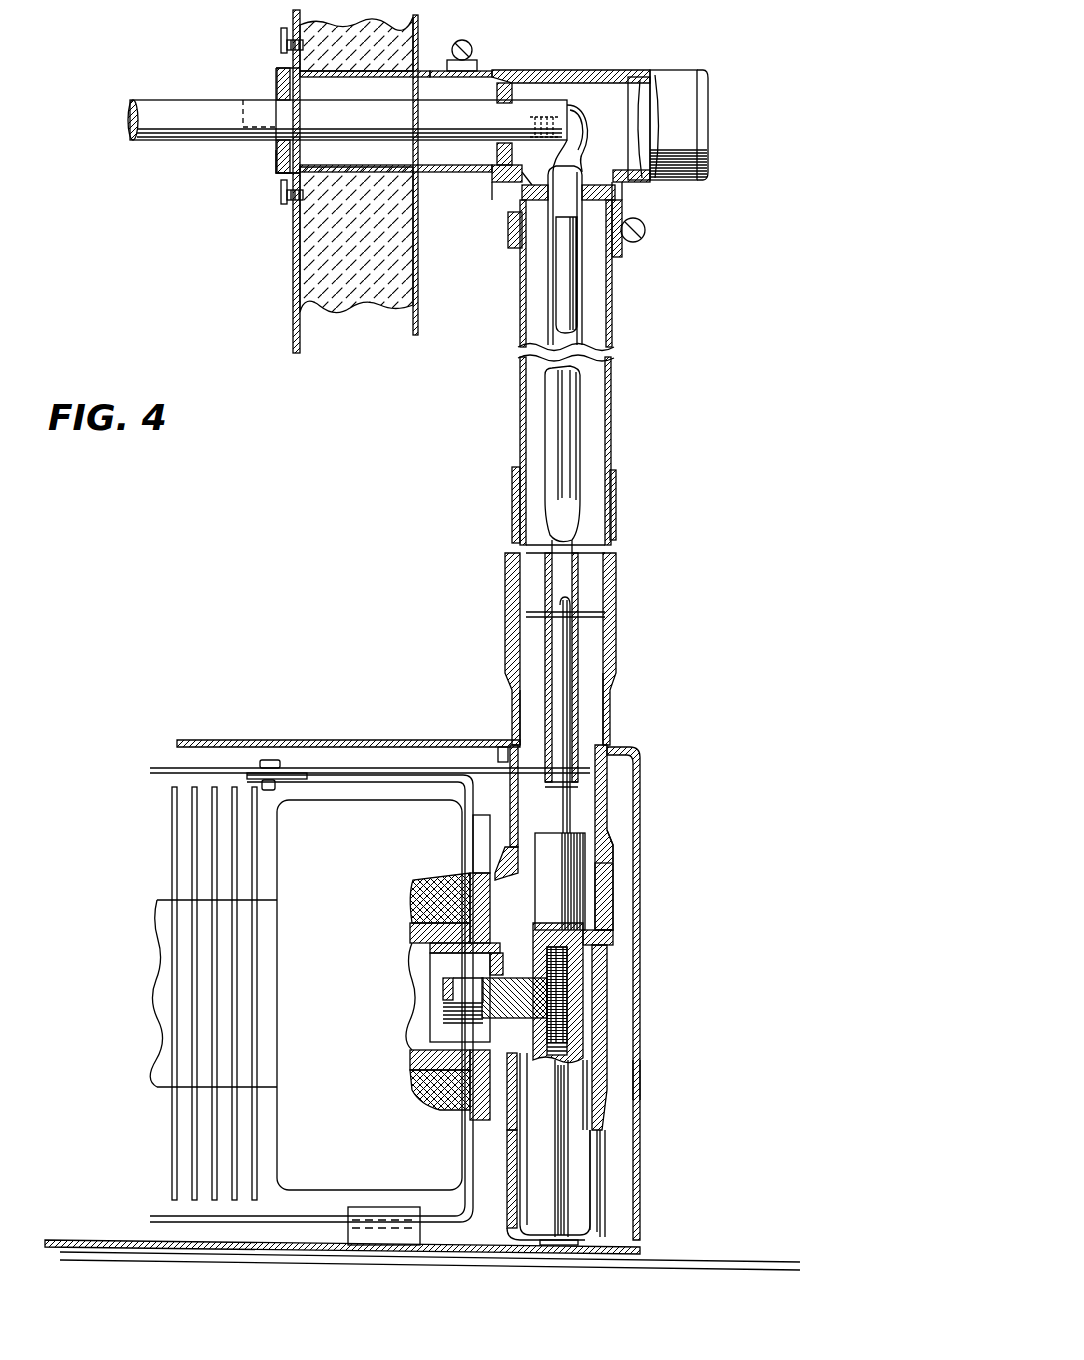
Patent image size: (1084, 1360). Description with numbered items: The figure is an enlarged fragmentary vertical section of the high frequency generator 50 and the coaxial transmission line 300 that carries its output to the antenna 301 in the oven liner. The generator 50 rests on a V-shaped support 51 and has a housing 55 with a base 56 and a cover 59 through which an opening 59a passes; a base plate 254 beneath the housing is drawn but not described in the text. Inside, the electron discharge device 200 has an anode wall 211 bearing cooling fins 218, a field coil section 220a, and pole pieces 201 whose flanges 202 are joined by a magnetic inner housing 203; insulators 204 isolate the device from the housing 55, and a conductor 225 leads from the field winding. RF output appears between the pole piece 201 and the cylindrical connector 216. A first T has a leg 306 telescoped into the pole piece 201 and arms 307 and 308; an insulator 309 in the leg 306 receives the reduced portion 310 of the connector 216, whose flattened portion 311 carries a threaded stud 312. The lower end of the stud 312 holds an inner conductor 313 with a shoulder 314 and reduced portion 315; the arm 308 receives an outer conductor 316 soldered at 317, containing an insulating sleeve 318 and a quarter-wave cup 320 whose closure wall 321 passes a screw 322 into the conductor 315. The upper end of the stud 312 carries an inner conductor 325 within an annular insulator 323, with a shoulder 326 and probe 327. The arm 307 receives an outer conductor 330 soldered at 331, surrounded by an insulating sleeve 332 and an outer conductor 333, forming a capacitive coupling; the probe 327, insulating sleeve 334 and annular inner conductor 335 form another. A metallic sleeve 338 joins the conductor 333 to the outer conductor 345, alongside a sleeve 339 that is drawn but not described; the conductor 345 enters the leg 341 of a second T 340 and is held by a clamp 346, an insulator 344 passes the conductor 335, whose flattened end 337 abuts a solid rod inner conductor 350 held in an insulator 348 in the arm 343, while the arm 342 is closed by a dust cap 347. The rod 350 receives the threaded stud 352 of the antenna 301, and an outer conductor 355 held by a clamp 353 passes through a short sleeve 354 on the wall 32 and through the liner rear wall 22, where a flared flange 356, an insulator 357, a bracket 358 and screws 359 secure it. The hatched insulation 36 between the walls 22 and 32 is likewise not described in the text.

The liner rear wall 22 is at (302, 16).
The wall 32 is at (420, 42).
The insulation 36 is at (355, 30).
The high frequency generator 50 is at (207, 725).
The V-shaped support 51 is at (752, 1262).
The housing 55 is at (642, 897).
The base 56 is at (641, 1082).
The cover 59 is at (368, 740).
The opening 59a is at (500, 745).
The electron discharge device 200 is at (158, 898).
The pole piece 201 is at (410, 932).
The flange 202 is at (485, 815).
The inner housing 203 is at (153, 768).
The insulator 204 is at (348, 1230).
The anode wall 211 is at (157, 1020).
The cylindrical connector 216 is at (445, 1003).
The cooling fins 218 is at (172, 818).
The field coil section 220a is at (335, 812).
The conductor 225 is at (268, 760).
The base plate 254 is at (600, 1244).
The transmission line 300 is at (632, 557).
The antenna 301 is at (170, 141).
The leg 306 is at (430, 956).
The arm 307 is at (615, 915).
The arm 308 is at (608, 1100).
The insulator 309 is at (410, 1062).
The reduced portion 310 is at (492, 962).
The flattened and apertured portion 311 is at (582, 1008).
The threaded stud 312 is at (568, 1025).
The inner conductor 313 is at (565, 1048).
The shoulder 314 is at (590, 1115).
The reduced portion 315 is at (566, 1180).
The outer conductor 316 is at (512, 1160).
The soldering 317 is at (505, 1120).
The insulating sleeve 318 is at (598, 1215).
The cylindrical cup 320 is at (606, 1195).
The outer closure wall 321 is at (540, 1241).
The screw 322 is at (525, 1232).
The annular insulator 323 is at (606, 940).
The inner conductor 325 is at (583, 862).
The shoulder 326 is at (582, 833).
The probe 327 is at (568, 717).
The outer annular conductor 330 is at (610, 735).
The soldering 331 is at (614, 858).
The insulating sleeve 332 is at (612, 692).
The outer conductor 333 is at (614, 678).
The insulating sleeve 334 is at (577, 796).
The annular inner conductor 335 is at (575, 388).
The flattened upper end 337 is at (580, 148).
The metallic sleeve 338 is at (508, 572).
The sleeve 339 is at (512, 465).
The second T 340 is at (570, 70).
The lower leg 341 is at (623, 210).
The arm 342 is at (640, 76).
The arm 343 is at (495, 72).
The insulator 344 is at (618, 193).
The outer conductor 345 is at (612, 297).
The clamp 346 is at (639, 244).
The dust cap 347 is at (700, 122).
The insulator 348 is at (500, 182).
The inner conductor 350 is at (450, 120).
The threaded stud 352 is at (262, 100).
The clamp 353 is at (470, 56).
The short sleeve 354 is at (405, 78).
The outer conductor 355 is at (435, 173).
The flange 356 is at (290, 19).
The insulator 357 is at (277, 158).
The bracket 358 is at (282, 68).
The screws 359 is at (283, 200).